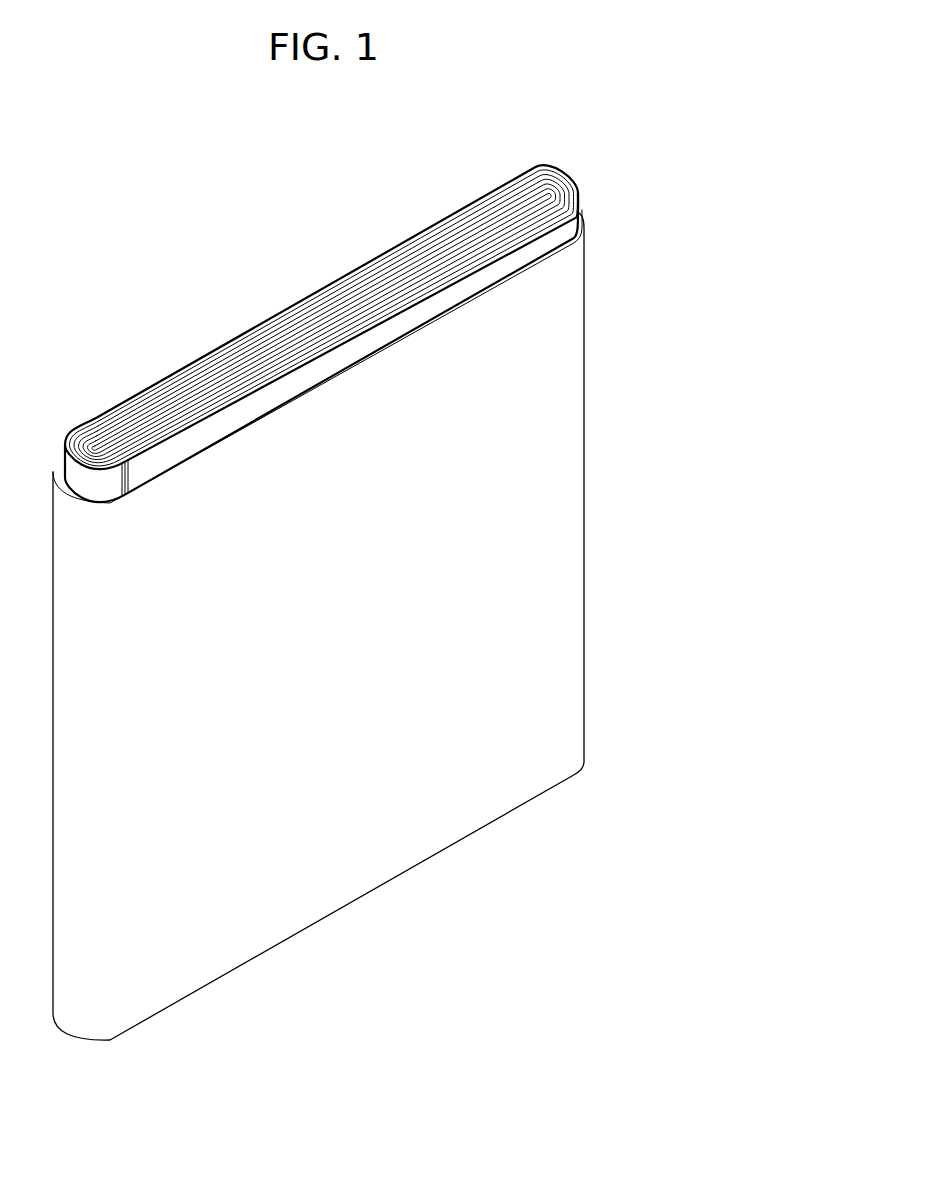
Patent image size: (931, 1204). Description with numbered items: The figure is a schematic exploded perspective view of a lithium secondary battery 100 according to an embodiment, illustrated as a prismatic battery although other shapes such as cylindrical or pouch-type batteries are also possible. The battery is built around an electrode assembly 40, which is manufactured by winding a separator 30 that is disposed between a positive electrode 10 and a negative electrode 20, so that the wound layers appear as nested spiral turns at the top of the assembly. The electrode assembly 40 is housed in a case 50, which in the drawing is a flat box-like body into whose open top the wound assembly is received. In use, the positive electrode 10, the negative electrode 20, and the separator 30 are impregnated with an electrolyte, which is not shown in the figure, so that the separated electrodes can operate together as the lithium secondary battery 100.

The lithium secondary battery 100 is at (304, 112).
The positive electrode 10 is at (580, 182).
The negative electrode 20 is at (538, 190).
The separator 30 is at (560, 182).
The electrode assembly 40 is at (298, 274).
The case 50 is at (573, 478).